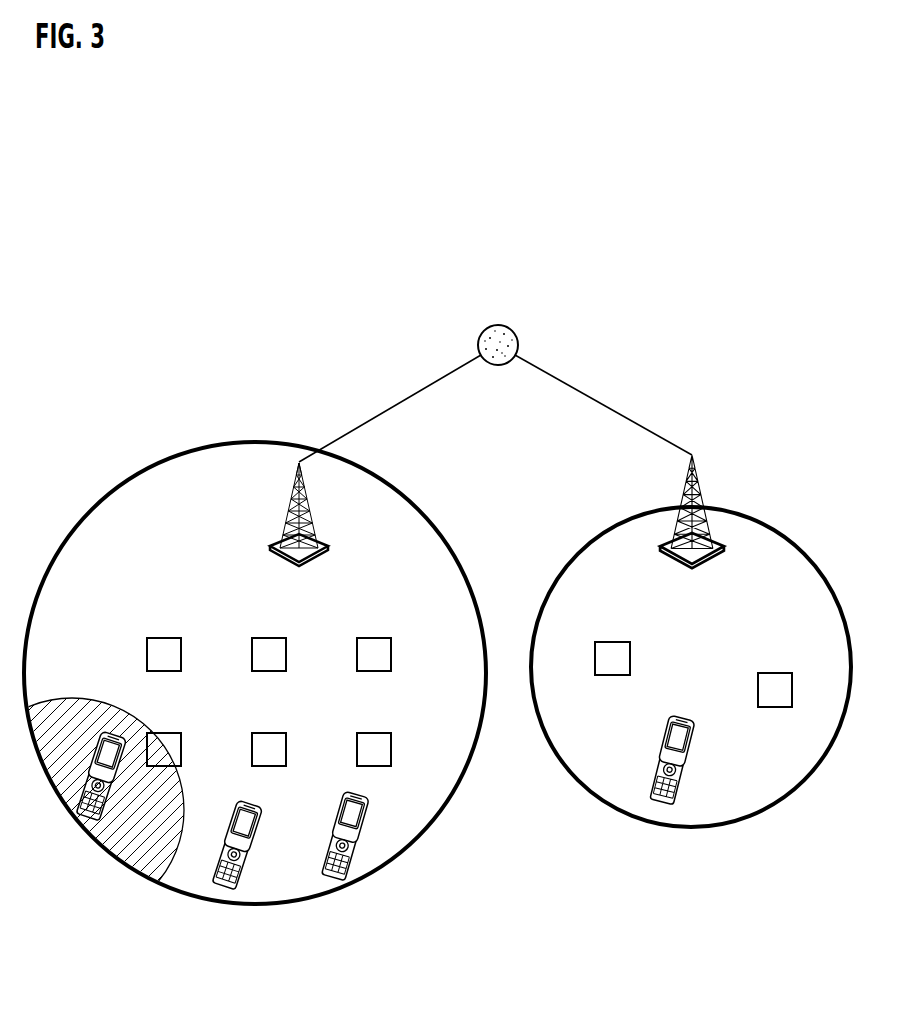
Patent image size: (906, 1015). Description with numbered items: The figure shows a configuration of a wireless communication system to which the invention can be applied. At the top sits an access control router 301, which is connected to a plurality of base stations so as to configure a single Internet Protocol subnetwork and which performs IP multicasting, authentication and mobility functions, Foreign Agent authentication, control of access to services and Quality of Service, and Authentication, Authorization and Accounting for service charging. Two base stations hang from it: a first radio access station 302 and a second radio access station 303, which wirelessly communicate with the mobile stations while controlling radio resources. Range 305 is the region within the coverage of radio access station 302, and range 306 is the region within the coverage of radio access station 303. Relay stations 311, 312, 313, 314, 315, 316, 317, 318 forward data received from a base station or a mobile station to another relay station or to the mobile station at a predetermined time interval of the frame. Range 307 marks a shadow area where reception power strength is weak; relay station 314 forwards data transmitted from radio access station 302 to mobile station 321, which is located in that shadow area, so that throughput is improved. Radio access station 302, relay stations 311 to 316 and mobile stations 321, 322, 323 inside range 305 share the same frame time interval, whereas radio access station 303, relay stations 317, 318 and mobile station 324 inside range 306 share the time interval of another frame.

The access control router (ACR) 301 is at (498, 324).
The first radio access station (RAS) 302 is at (320, 514).
The second radio access station (RAS) 303 is at (692, 538).
The range 305 is at (257, 440).
The range 306 is at (606, 525).
The shadow area 307 is at (63, 698).
The relay station (RS) 311 is at (163, 638).
The relay station (RS) 312 is at (268, 638).
The relay station (RS) 313 is at (373, 638).
The relay station (RS) 314 is at (163, 733).
The relay station (RS) 315 is at (268, 733).
The relay station (RS) 316 is at (373, 733).
The relay station (RS) 317 is at (612, 642).
The relay station (RS) 318 is at (772, 673).
The mobile station (MS) 321 is at (118, 734).
The mobile station (MS) 322 is at (229, 890).
The mobile station (MS) 323 is at (339, 879).
The mobile station (MS) 324 is at (661, 812).